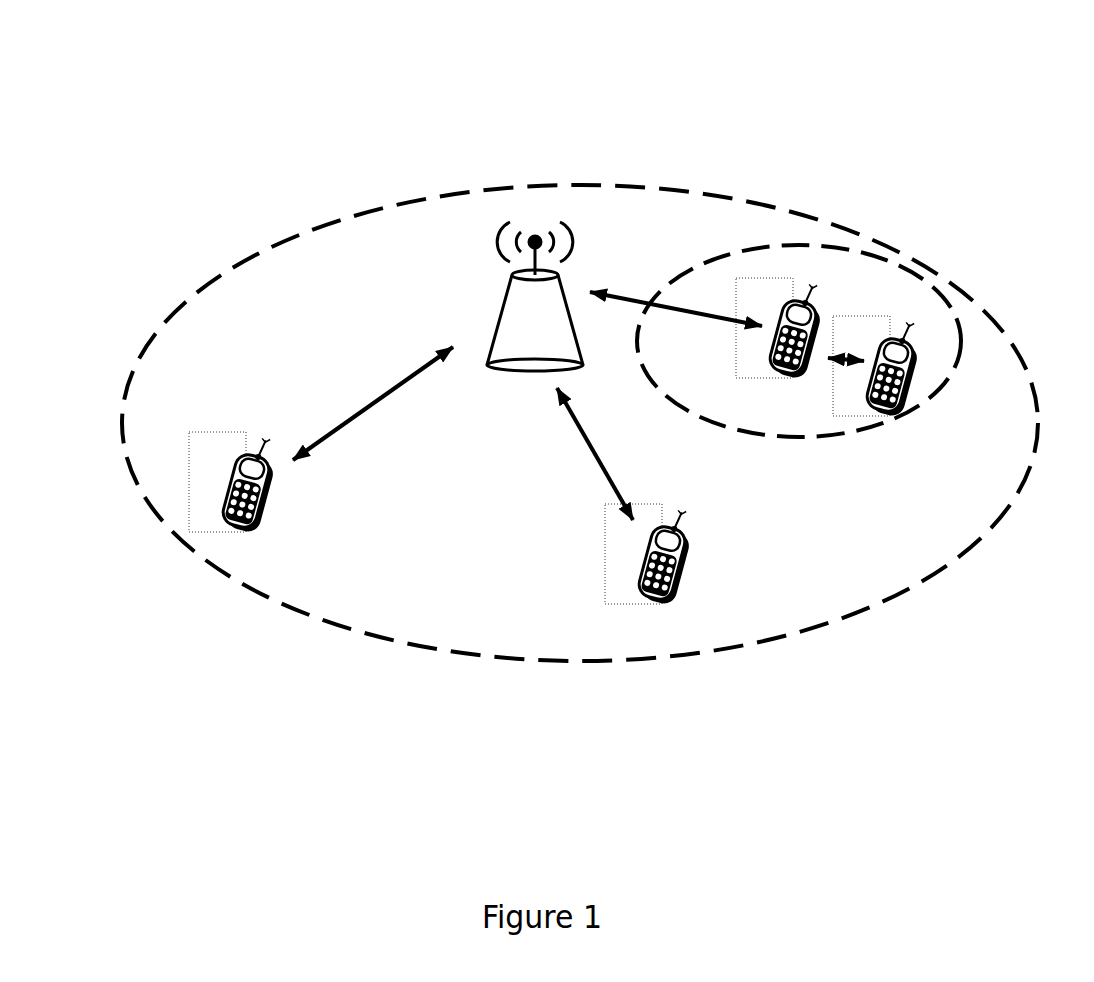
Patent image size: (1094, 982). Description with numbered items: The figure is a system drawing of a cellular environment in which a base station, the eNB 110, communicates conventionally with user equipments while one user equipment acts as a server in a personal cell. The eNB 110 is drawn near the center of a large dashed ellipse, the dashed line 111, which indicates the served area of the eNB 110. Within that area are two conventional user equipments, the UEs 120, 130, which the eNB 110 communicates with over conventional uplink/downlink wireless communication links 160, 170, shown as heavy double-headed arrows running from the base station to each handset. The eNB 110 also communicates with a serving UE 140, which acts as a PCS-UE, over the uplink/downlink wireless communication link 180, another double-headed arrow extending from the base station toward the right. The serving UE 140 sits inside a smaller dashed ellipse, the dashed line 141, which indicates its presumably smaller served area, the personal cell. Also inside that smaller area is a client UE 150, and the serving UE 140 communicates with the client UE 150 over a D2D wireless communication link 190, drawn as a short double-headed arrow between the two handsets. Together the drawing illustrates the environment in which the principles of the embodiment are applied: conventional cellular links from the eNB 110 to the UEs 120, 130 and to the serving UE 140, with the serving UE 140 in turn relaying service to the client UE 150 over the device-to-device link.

The eNB 110 is at (571, 277).
The dashed line 111 is at (195, 292).
The UE 120 is at (212, 523).
The UE 130 is at (632, 607).
The serving UE 140 is at (819, 302).
The dashed line 141 is at (900, 425).
The client UE 150 is at (918, 340).
The uplink/downlink wireless communication link 160 is at (382, 383).
The uplink/downlink wireless communication link 170 is at (578, 457).
The uplink/downlink wireless communication link 180 is at (686, 305).
The D2D wireless communication link 190 is at (840, 373).